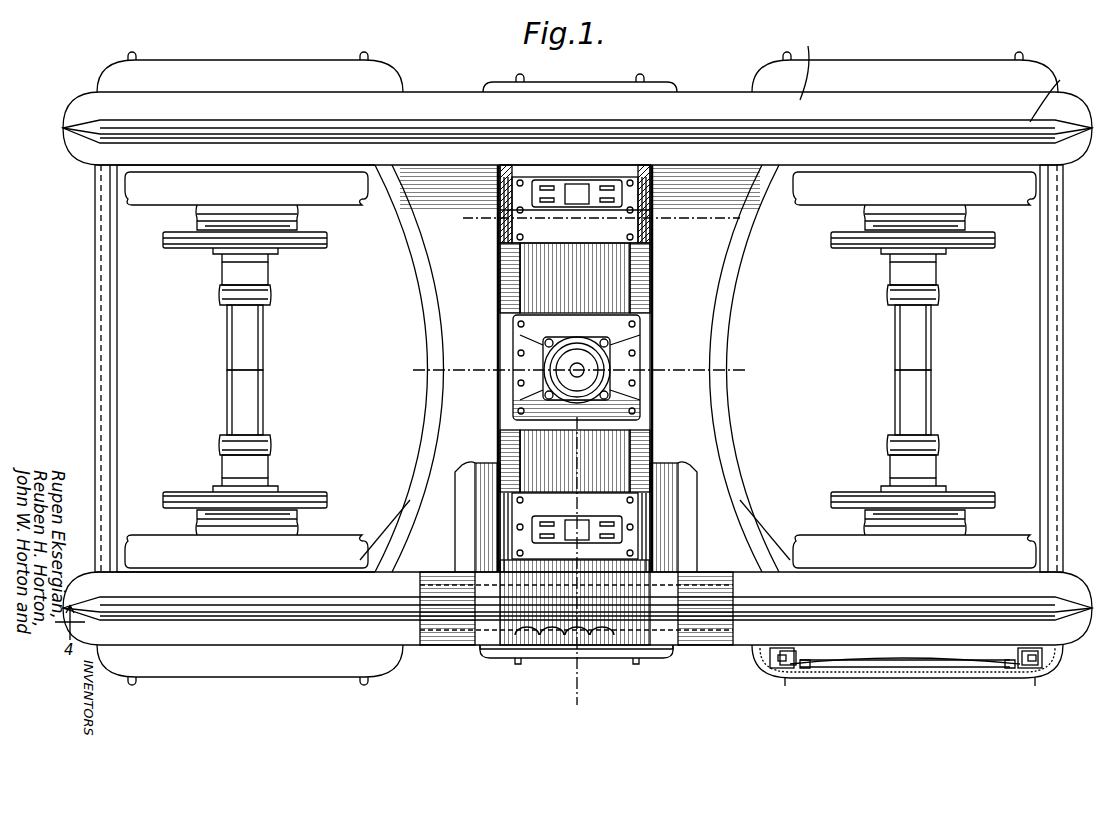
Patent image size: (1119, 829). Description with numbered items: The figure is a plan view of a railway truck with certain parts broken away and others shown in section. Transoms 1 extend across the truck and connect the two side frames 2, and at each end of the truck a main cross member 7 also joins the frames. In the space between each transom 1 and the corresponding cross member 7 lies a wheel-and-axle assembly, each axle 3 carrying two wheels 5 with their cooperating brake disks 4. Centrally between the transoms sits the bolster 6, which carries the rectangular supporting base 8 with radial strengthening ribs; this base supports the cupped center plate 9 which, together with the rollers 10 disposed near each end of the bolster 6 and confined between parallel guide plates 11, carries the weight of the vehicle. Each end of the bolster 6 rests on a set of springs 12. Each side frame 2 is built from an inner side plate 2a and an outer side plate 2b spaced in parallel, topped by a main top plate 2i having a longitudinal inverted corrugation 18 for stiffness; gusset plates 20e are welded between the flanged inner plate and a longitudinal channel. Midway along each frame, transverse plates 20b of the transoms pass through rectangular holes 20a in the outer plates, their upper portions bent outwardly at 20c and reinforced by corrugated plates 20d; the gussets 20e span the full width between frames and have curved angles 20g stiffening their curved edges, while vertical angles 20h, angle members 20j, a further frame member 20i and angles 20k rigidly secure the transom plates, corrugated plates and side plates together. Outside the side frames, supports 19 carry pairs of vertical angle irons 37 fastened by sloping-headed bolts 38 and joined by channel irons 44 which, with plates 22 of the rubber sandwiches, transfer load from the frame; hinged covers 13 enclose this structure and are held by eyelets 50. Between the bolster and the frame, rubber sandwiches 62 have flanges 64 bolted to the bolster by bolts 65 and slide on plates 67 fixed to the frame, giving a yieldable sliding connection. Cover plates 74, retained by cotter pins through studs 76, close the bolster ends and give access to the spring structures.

The transom 1 is at (430, 265).
The side frame 2 is at (698, 105).
The inner side plate 2a is at (405, 560).
The outer side plate 2b is at (420, 650).
The main top plate 2i is at (262, 690).
The axle 3 is at (263, 372).
The brake disk 4 is at (327, 244).
The wheel 5 is at (350, 205).
The bolster 6 is at (680, 312).
The main cross member 7 is at (110, 378).
The supporting base 8 is at (640, 398).
The cupped center plate 9 is at (487, 206).
The roller 10 is at (572, 210).
The guide plate 11 is at (588, 180).
The spring 12 is at (545, 645).
The cover 13 is at (220, 64).
The corrugation 18 is at (1040, 610).
The support 19 is at (780, 668).
The rectangular hole 20a is at (472, 478).
The transverse plate 20b is at (475, 470).
The outwardly bent upper portion 20c is at (700, 580).
The corrugated plate 20d is at (680, 482).
The gusset plate 20e is at (455, 312).
The curved angle 20g is at (457, 410).
The vertical angle 20h is at (487, 650).
The frame portion 20i is at (475, 565).
The vertical angle member 20j is at (690, 575).
The angle 20k is at (418, 628).
The metal plate 22 is at (950, 665).
The angle-iron 37 is at (770, 650).
The bolt 38 is at (806, 678).
The channel-iron 44 is at (908, 667).
The eyelet 50 is at (786, 690).
The rubber sandwich 62 is at (504, 243).
The flange 64 is at (650, 232).
The bolt 65 is at (510, 178).
The plate 67 is at (486, 238).
The cover plate 74 is at (585, 85).
The stud 76 is at (517, 664).